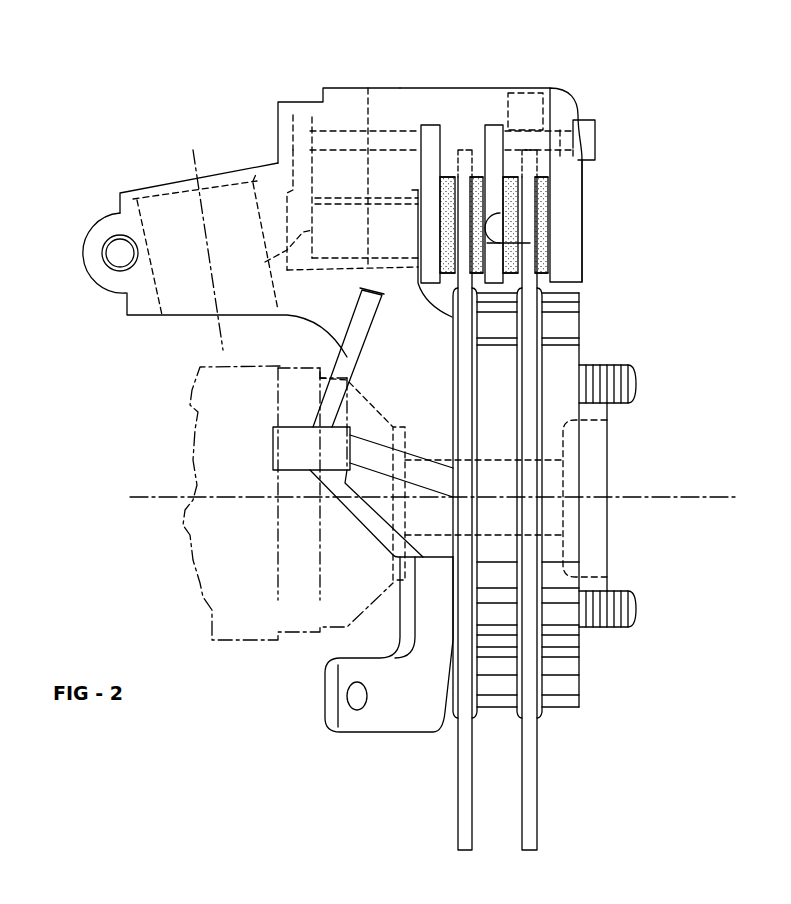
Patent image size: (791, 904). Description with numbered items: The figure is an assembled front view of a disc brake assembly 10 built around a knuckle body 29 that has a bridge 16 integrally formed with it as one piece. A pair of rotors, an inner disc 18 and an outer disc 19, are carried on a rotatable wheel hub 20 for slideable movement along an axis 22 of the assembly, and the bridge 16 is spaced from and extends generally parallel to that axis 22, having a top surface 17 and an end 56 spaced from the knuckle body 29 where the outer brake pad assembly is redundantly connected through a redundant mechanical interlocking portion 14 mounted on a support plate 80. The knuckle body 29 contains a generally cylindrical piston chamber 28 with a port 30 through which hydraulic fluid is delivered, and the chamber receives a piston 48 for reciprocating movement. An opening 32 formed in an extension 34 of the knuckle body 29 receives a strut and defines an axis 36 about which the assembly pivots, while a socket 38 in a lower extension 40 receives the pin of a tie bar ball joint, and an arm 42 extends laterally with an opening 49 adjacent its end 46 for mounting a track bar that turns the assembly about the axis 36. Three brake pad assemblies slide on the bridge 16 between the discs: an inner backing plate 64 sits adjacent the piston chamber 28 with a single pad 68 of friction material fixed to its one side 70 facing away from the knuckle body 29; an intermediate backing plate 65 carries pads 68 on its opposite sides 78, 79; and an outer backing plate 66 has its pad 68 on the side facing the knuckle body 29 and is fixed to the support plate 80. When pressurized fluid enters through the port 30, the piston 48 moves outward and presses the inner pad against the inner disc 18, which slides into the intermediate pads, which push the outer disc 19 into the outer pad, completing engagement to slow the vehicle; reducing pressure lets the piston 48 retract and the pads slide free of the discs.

The disc brake assembly 10 is at (150, 92).
The redundant mechanical interlocking portion 14 is at (537, 88).
The bridge 16 is at (400, 107).
The top surface 17 is at (455, 87).
The inner disc 18 is at (465, 795).
The outer disc 19 is at (533, 765).
The rotatable wheel hub 20 is at (572, 708).
The axis 22 is at (663, 498).
The piston chamber 28 is at (283, 200).
The knuckle body 29 is at (280, 190).
The port 30 is at (303, 112).
The opening 32 is at (135, 192).
The extension 34 is at (96, 284).
The axis 36 is at (218, 325).
The socket 38 is at (372, 733).
The lower extension 40 is at (345, 710).
The arm 42 is at (370, 465).
The end 46 is at (270, 447).
The piston 48 is at (263, 265).
The opening 49 is at (291, 422).
The end 56 is at (517, 88).
The inner backing plate 64 is at (431, 125).
The intermediate backing plate 65 is at (491, 125).
The outer backing plate 66 is at (543, 128).
The pads 68 is at (478, 177).
The side 70 is at (448, 262).
The side 78 is at (500, 243).
The side 79 is at (512, 227).
The support plate 80 is at (579, 205).